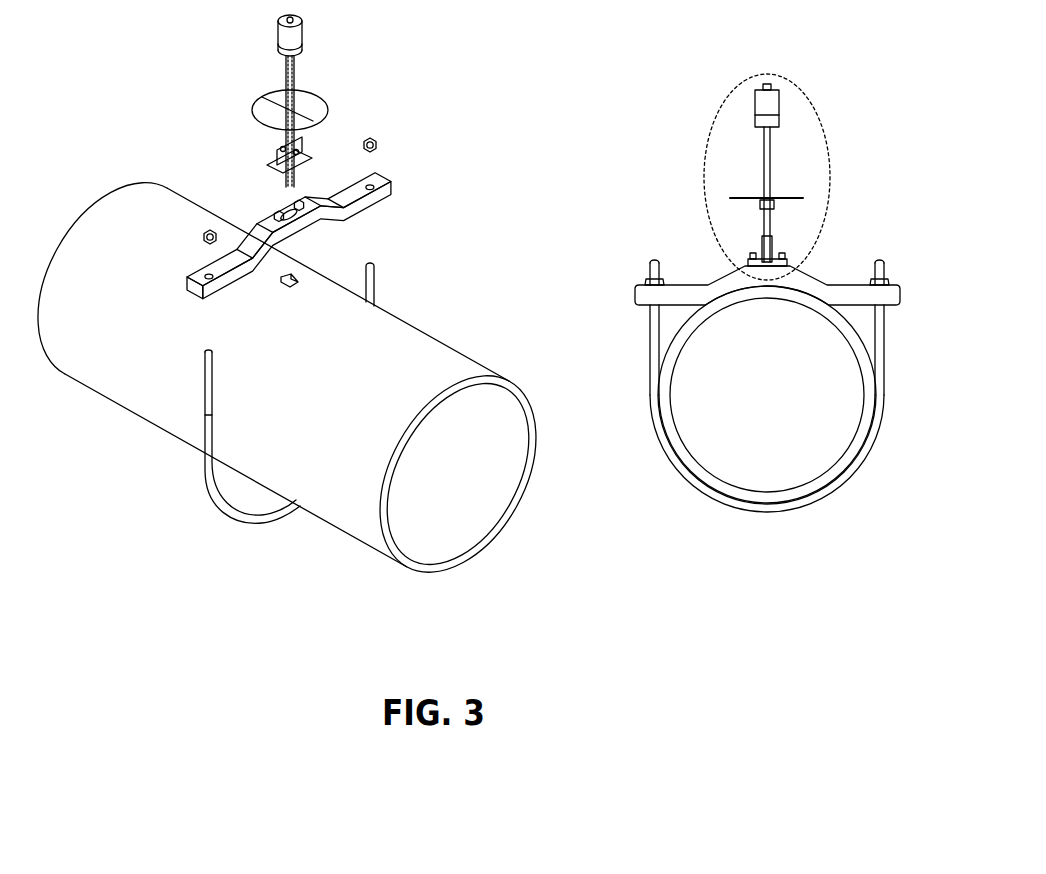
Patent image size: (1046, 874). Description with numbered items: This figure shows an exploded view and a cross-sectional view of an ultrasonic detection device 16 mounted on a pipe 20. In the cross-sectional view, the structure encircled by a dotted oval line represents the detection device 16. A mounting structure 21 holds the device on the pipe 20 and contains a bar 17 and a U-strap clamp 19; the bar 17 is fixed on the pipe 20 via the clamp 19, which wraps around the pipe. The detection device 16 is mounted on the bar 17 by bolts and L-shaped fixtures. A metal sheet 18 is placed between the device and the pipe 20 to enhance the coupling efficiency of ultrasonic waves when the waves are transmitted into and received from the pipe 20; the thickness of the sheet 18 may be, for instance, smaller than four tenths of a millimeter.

The ultrasonic detection device 16 is at (352, 78).
The bar 17 is at (388, 176).
The metal sheet 18 is at (302, 275).
The U-strap clamp 19 is at (380, 279).
The pipe 20 is at (401, 317).
The mounting structure 21 is at (905, 287).